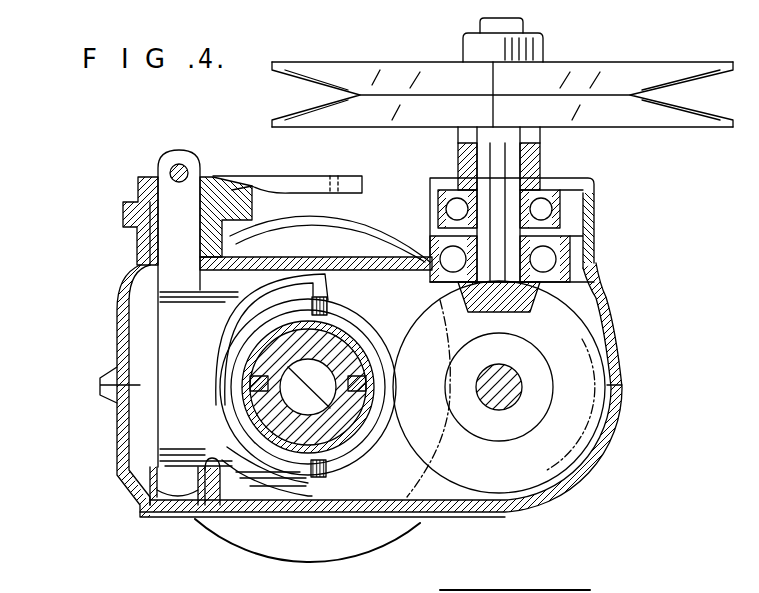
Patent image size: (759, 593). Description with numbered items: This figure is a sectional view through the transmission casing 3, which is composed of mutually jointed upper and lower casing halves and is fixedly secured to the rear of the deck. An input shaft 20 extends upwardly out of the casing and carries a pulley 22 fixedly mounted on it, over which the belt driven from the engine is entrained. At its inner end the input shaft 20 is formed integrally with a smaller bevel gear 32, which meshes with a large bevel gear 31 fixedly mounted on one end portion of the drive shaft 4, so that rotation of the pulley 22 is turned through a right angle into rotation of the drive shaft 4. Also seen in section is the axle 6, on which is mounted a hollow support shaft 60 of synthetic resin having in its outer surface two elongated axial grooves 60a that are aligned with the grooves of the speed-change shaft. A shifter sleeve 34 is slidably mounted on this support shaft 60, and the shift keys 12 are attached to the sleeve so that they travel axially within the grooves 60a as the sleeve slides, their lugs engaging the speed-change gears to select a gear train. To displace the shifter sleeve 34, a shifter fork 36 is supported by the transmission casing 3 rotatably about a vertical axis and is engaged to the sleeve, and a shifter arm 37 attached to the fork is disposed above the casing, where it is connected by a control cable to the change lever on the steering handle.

The transmission casing 3 is at (613, 343).
The drive shaft 4 is at (520, 402).
The axle 6 is at (343, 477).
The shift key 12 is at (248, 390).
The input shaft 20 is at (538, 164).
The pulley 22 is at (367, 110).
The large bevel gear 31 is at (568, 435).
The smaller bevel gear 32 is at (605, 290).
The shifter sleeve 34 is at (343, 270).
The shifter fork 36 is at (226, 447).
The shifter arm 37 is at (292, 177).
The support shaft 60 is at (345, 452).
The elongated axial groove 60a is at (335, 330).